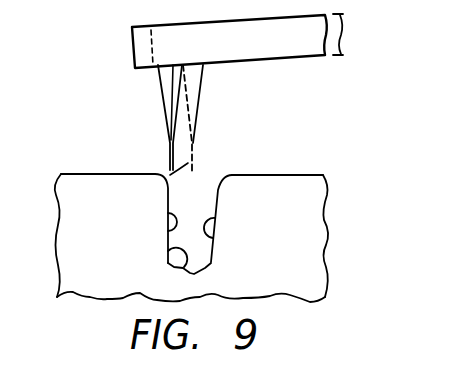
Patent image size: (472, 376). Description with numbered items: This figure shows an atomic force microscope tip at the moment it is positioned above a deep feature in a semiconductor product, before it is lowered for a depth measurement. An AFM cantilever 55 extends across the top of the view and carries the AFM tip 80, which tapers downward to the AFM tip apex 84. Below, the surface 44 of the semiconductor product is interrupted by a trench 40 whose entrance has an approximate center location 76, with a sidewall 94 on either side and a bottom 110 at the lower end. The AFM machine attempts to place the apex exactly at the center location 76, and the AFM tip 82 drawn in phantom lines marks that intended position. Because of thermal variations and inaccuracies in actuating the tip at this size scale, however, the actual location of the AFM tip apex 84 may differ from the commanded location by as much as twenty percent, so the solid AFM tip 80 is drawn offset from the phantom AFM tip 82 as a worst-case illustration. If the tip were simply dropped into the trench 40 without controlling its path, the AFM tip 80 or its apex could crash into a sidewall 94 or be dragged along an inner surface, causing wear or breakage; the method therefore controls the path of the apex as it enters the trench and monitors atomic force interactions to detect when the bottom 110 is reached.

The AFM cantilever 55 is at (132, 44).
The AFM tip 80 is at (161, 88).
The AFM tip (phantom) 82 is at (202, 82).
The AFM tip apex 84 is at (167, 172).
The trench 40 is at (204, 179).
The surface 44 is at (90, 173).
The center location 76 is at (168, 190).
The sidewall 94 is at (168, 231).
The bottom 110 is at (170, 256).